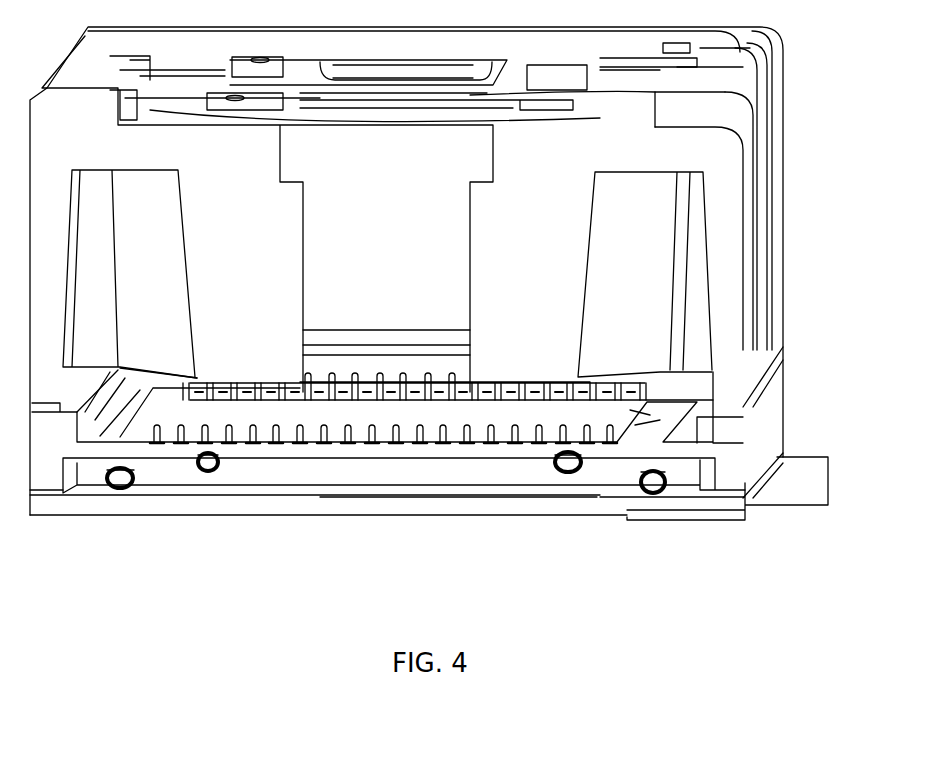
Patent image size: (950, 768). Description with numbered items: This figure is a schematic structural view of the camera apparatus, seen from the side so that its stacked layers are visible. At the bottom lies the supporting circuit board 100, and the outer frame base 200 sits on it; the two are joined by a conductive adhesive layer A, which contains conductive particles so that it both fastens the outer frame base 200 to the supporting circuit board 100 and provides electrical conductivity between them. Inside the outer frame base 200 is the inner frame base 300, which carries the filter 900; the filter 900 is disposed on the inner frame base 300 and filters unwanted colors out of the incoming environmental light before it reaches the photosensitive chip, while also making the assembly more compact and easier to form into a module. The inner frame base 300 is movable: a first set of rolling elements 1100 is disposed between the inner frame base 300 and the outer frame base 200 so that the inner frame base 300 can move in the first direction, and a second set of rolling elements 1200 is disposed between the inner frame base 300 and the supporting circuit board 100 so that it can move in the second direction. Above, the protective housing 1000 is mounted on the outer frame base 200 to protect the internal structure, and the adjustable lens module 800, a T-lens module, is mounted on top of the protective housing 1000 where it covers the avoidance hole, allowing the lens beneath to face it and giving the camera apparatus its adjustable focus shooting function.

The supporting circuit board 100 is at (133, 505).
The outer frame base 200 is at (720, 430).
The inner frame base 300 is at (520, 477).
The adjustable lens module 800 is at (447, 73).
The filter 900 is at (383, 413).
The protective housing 1000 is at (718, 118).
The first set of rolling elements 1100 is at (208, 472).
The second set of rolling elements 1200 is at (653, 493).
The conductive adhesive layer A is at (43, 490).